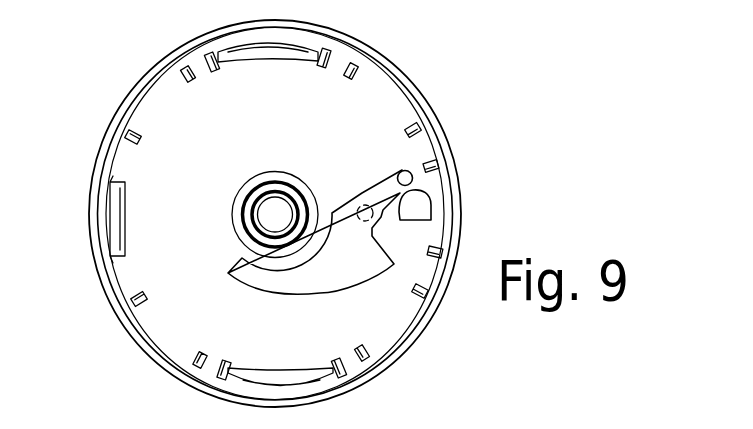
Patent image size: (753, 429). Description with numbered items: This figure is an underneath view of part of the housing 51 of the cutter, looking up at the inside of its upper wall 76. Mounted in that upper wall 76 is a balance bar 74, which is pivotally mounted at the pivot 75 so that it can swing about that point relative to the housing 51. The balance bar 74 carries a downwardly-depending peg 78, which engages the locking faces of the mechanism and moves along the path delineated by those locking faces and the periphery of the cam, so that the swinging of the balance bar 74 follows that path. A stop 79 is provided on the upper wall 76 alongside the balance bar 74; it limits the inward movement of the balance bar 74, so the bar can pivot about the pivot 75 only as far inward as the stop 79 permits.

The housing 51 is at (390, 63).
The balance bar 74 is at (358, 269).
The pivot 75 is at (362, 205).
The upper wall 76 is at (185, 122).
The peg 78 is at (410, 171).
The stop 79 is at (413, 208).